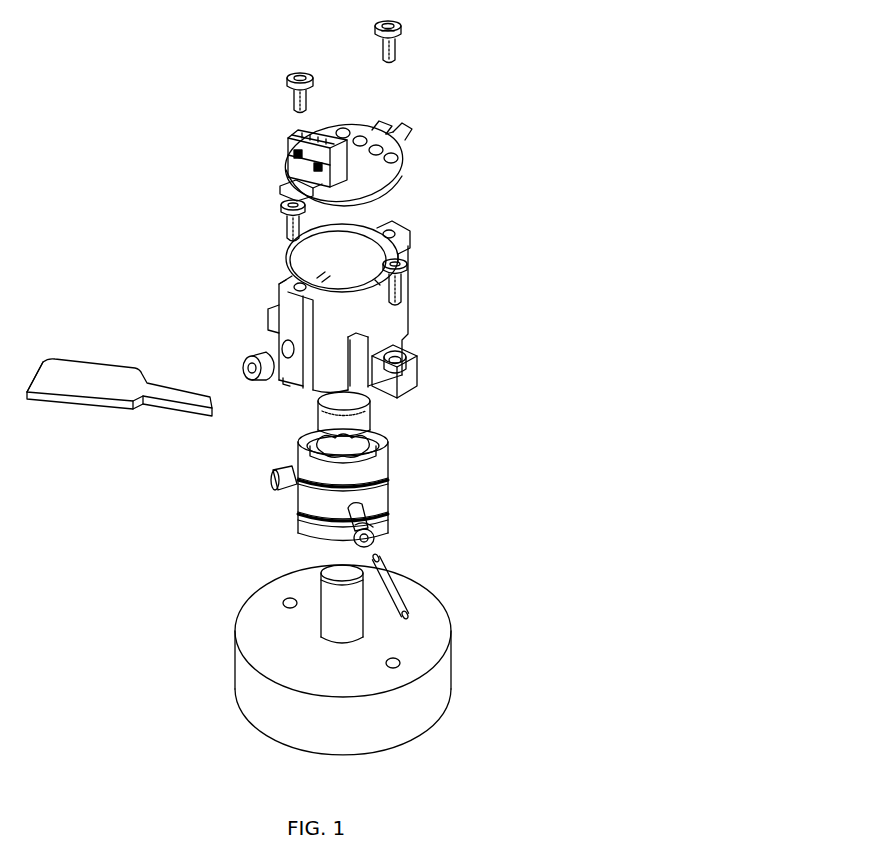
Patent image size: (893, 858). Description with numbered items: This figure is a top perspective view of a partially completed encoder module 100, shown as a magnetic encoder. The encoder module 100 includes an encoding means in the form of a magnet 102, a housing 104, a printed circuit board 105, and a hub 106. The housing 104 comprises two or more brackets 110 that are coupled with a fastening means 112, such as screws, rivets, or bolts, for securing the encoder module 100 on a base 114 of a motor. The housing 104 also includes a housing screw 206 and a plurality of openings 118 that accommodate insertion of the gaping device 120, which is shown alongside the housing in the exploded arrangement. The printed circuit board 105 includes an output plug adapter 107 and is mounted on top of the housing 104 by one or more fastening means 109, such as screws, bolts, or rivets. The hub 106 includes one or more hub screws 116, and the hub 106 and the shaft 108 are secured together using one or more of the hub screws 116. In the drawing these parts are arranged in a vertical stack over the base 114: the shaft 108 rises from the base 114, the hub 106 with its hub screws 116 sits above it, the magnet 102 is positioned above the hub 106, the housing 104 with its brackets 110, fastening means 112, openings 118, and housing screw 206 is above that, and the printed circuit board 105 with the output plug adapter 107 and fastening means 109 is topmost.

The encoder module 100 is at (562, 71).
The magnet 102 is at (330, 408).
The housing 104 is at (415, 295).
The printed circuit board 105 is at (373, 178).
The hub 106 is at (395, 480).
The output plug adapter 107 is at (290, 150).
The shaft 108 is at (333, 600).
The fastening means 109 is at (292, 75).
The bracket 110 is at (418, 373).
The fastening means 112 is at (405, 262).
The base 114 is at (432, 638).
The hub screw 116 is at (273, 481).
The opening 118 is at (358, 386).
The gaping device 120 is at (88, 377).
The housing screw 206 is at (245, 362).